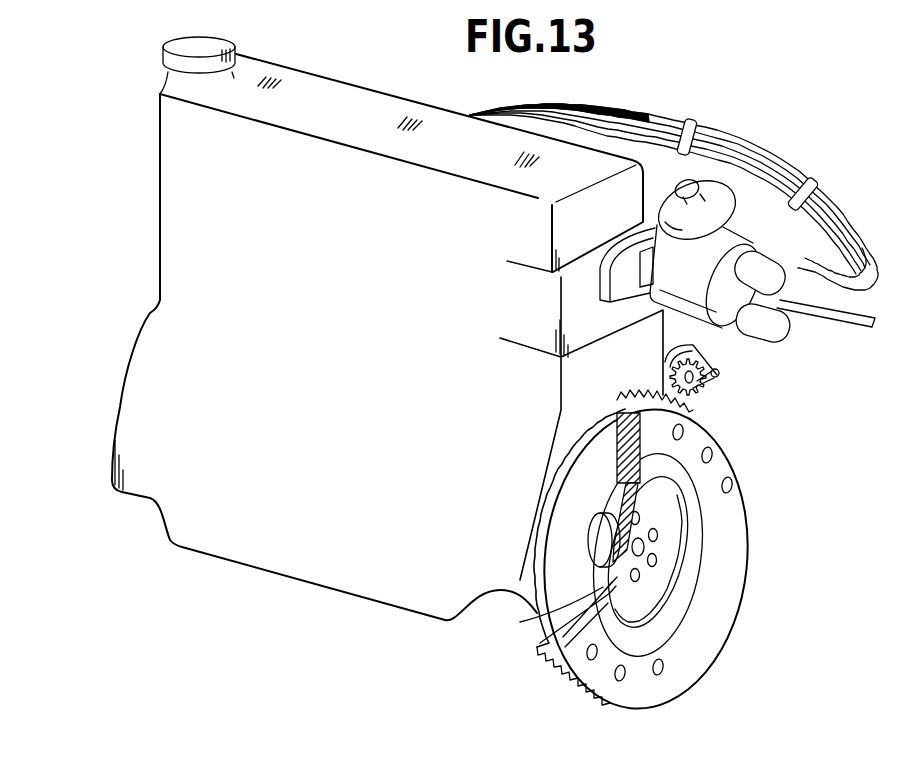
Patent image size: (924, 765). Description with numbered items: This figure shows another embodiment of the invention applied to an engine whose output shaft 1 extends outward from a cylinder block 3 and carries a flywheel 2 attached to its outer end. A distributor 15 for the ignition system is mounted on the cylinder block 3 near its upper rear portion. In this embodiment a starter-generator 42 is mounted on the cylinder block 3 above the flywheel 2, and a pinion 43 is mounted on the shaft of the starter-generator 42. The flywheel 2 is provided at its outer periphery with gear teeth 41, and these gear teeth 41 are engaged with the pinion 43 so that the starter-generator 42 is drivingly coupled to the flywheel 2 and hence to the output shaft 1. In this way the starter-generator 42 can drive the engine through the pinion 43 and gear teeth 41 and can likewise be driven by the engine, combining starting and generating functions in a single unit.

The output shaft 1 is at (540, 608).
The flywheel 2 is at (690, 597).
The cylinder block 3 is at (160, 205).
The distributor 15 is at (740, 240).
The gear teeth 41 is at (655, 378).
The starter-generator 42 is at (708, 347).
The pinion 43 is at (708, 396).